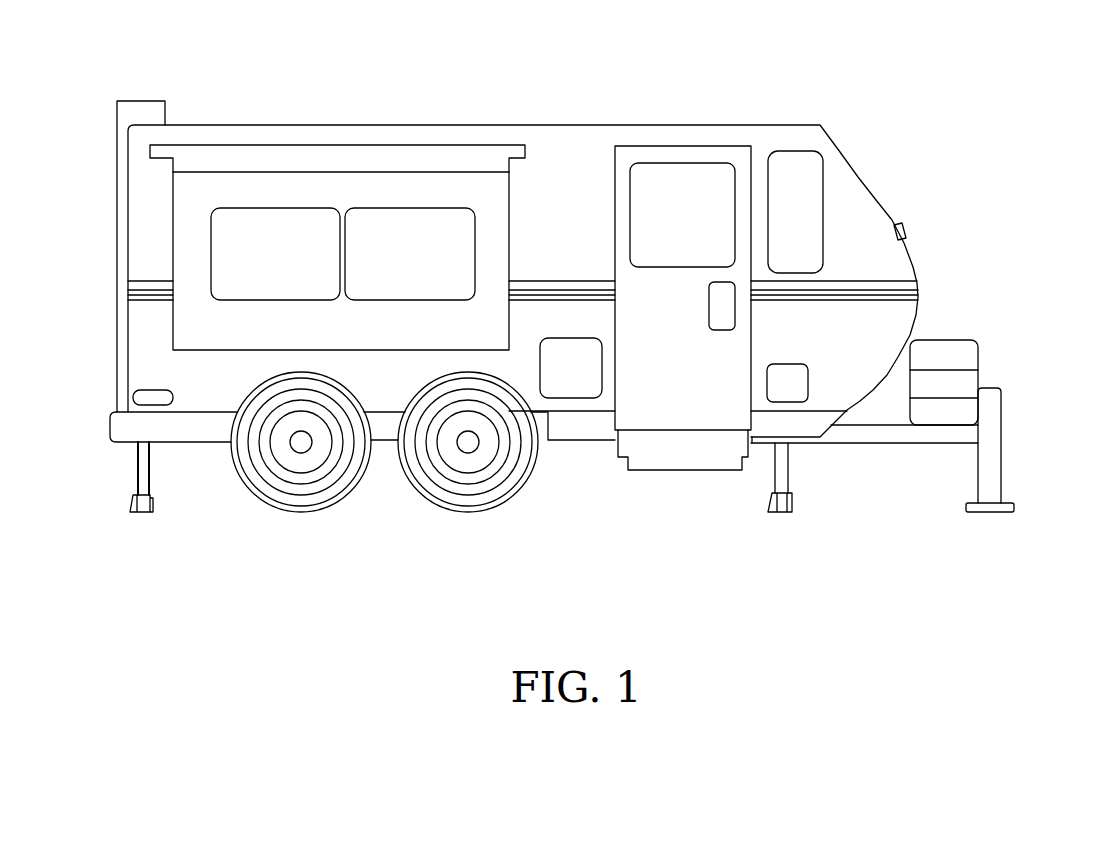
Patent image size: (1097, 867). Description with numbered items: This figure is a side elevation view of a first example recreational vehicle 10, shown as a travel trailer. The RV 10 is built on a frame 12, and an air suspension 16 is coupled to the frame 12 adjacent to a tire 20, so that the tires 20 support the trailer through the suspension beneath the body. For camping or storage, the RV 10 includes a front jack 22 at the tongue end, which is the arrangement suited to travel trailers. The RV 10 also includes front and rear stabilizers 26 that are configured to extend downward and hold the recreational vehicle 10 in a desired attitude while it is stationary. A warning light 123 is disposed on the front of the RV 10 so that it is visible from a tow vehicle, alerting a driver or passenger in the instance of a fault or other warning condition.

The recreational vehicle 10 is at (893, 80).
The frame 12 is at (580, 441).
The right air suspension 16 is at (383, 441).
The right tire 20 is at (300, 513).
The front jack 22 is at (1001, 447).
The stabilizers 26 is at (137, 478).
The warning light 123 is at (906, 233).